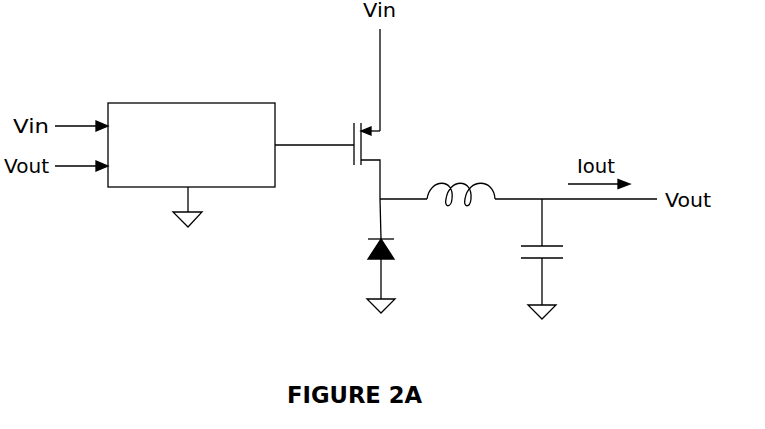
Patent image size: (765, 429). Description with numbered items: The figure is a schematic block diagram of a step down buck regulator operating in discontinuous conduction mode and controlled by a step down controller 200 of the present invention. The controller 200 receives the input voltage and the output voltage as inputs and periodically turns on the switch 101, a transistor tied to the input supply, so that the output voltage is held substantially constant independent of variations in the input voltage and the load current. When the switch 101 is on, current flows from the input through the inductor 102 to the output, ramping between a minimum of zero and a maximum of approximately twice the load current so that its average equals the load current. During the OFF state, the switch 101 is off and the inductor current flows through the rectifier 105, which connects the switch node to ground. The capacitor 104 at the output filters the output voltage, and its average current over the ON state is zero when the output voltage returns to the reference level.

The controller 200 is at (185, 103).
The switch 101 is at (388, 142).
The inductive pass element 102 is at (455, 178).
The rectifier 105 is at (365, 255).
The capacitor 104 is at (572, 255).